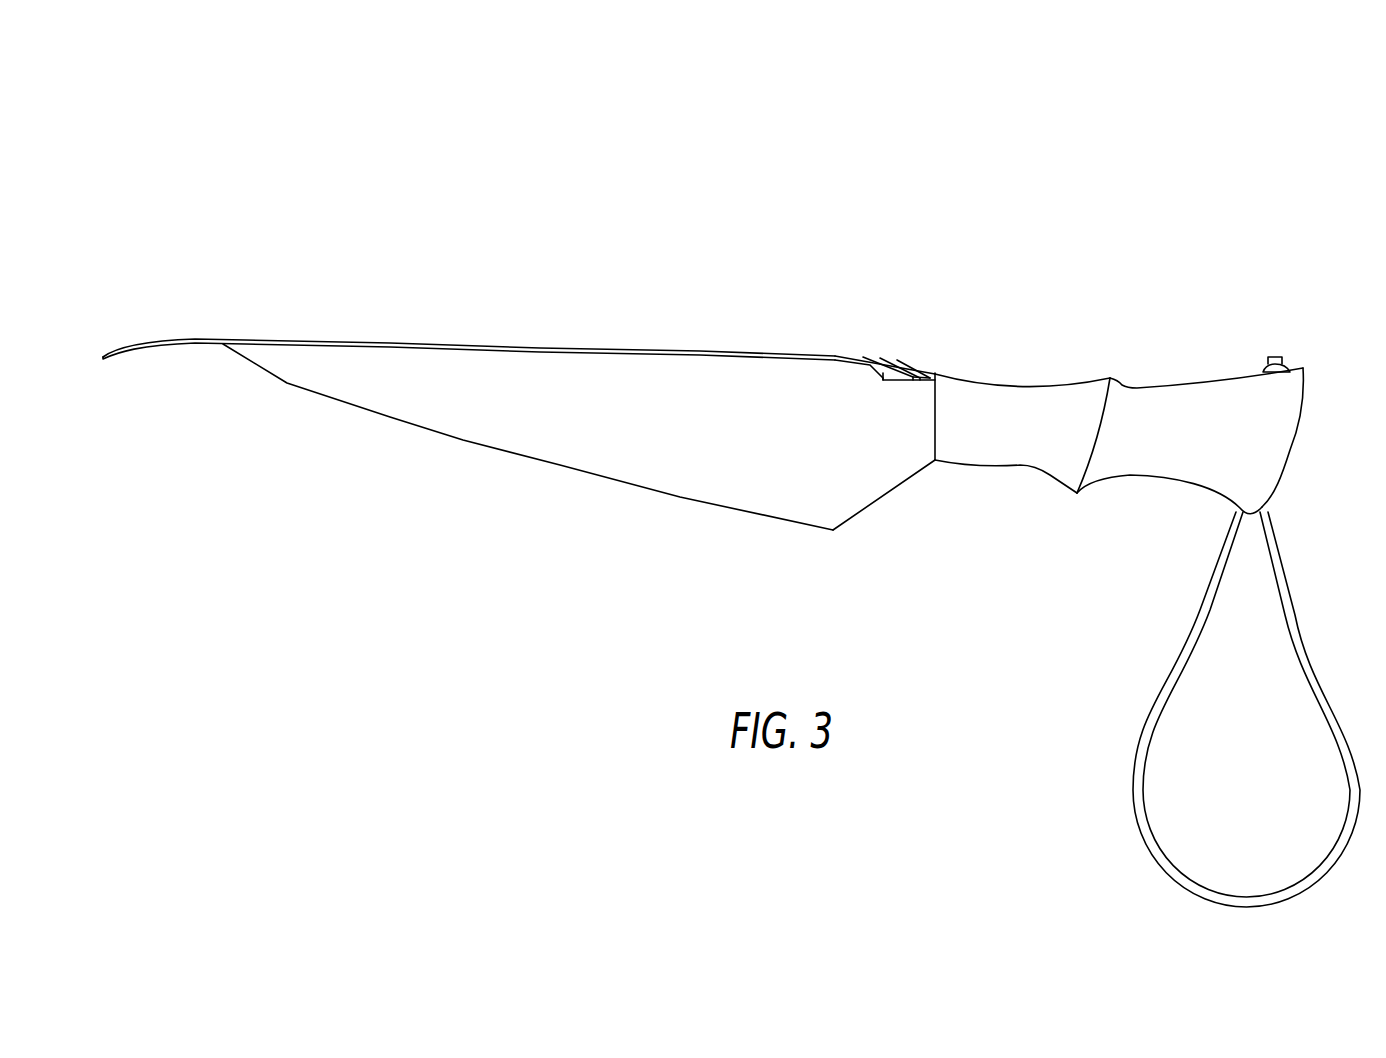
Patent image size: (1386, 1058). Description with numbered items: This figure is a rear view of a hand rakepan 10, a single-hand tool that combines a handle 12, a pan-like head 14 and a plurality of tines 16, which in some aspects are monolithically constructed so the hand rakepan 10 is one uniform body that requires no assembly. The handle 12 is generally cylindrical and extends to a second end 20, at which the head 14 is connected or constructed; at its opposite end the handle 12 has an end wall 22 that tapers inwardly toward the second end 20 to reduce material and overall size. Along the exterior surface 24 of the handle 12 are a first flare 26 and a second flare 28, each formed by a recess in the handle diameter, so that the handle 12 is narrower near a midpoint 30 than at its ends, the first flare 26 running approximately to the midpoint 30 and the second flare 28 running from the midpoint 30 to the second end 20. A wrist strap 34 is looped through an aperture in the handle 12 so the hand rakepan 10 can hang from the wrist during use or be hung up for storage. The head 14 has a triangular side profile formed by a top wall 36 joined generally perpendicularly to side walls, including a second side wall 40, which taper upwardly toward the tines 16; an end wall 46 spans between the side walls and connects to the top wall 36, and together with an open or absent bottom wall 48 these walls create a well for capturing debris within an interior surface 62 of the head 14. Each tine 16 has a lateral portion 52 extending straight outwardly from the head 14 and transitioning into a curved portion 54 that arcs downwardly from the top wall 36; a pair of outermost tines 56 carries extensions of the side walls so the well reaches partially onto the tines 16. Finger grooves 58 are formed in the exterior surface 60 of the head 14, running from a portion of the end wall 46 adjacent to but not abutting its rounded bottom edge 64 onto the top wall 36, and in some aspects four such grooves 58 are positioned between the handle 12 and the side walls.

The hand rakepan 10 is at (1062, 128).
The handle 12 is at (1153, 583).
The head 14 is at (518, 384).
The plurality of tines 16 is at (240, 233).
The second end 20 is at (1303, 370).
The end wall 22 is at (1303, 420).
The exterior surface 24 is at (1195, 420).
The first flare 26 is at (1157, 473).
The second flare 28 is at (1027, 470).
The midpoint 30 is at (1077, 493).
The wrist strap 34 is at (1297, 614).
The top wall 36 is at (572, 347).
The second side wall 40 is at (712, 473).
The end wall 46 is at (903, 455).
The bottom wall 48 is at (470, 497).
The lateral portion 52 is at (194, 345).
The curved portion 54 is at (108, 341).
The outermost tines 56 is at (217, 340).
The grooves 58 is at (922, 399).
The exterior surface 60 is at (663, 278).
The interior surface 62 is at (603, 537).
The bottom edge 64 is at (833, 530).